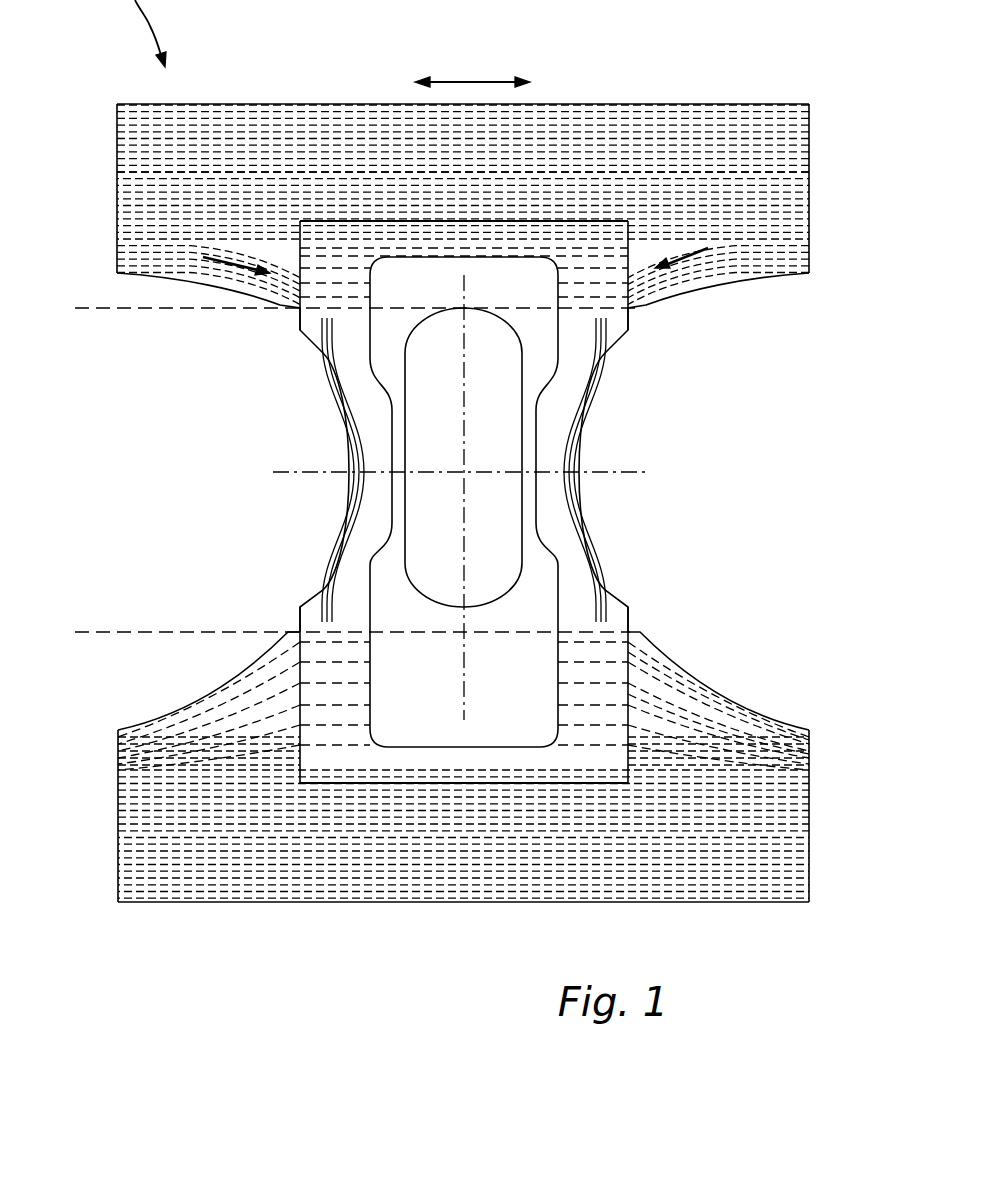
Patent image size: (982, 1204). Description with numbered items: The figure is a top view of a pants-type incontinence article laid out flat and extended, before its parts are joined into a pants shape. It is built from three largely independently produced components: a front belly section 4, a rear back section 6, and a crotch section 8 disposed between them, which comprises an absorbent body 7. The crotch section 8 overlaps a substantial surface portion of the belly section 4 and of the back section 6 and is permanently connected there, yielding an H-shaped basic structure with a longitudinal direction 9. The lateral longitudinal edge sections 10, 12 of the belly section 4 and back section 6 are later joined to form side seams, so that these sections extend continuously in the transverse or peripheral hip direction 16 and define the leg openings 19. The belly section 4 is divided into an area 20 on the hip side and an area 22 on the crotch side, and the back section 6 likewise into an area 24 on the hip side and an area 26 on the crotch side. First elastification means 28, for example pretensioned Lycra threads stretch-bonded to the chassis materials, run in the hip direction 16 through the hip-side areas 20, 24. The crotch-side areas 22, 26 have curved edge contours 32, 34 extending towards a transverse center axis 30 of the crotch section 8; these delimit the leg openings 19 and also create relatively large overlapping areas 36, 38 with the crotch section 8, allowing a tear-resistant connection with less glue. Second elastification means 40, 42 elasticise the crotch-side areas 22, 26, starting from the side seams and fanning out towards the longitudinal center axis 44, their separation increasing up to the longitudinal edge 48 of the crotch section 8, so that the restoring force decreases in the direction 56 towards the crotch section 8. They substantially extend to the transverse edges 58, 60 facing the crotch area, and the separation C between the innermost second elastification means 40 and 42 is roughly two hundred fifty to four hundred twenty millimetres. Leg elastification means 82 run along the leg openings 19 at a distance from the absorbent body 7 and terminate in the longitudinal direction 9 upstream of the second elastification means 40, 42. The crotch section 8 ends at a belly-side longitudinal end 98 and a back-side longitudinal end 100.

The belly section 4 is at (839, 95).
The back section 6 is at (845, 623).
The absorbent body 7 is at (393, 293).
The crotch section 8 is at (102, 238).
The longitudinal direction 9 is at (467, 423).
The lateral longitudinal edge section 10 is at (809, 182).
The lateral longitudinal edge section 12 is at (812, 806).
The transverse or peripheral hip direction 16 is at (470, 80).
The leg openings 19 is at (140, 303).
The area on the hip side 20 is at (110, 243).
The area on the crotch side 22 is at (78, 243).
The area on the hip side 24 is at (110, 902).
The area on the crotch side 26 is at (110, 770).
The first elastification means 28 is at (223, 835).
The transverse center axis 30 is at (307, 478).
The edge contour 32 is at (198, 280).
The edge contour 34 is at (190, 710).
The overlapping area 36 is at (464, 266).
The overlapping area 38 is at (464, 693).
The second elastification means 40 is at (697, 277).
The second elastification means 42 is at (697, 715).
The longitudinal center axis 44 is at (467, 687).
The longitudinal edge 48 is at (635, 734).
The direction 56 is at (678, 257).
The transverse edge 58 is at (640, 310).
The transverse edge 60 is at (648, 632).
The leg elastification means 82 is at (570, 425).
The belly-side longitudinal end 98 is at (472, 220).
The back-side longitudinal end 100 is at (467, 784).
The separation C is at (658, 298).